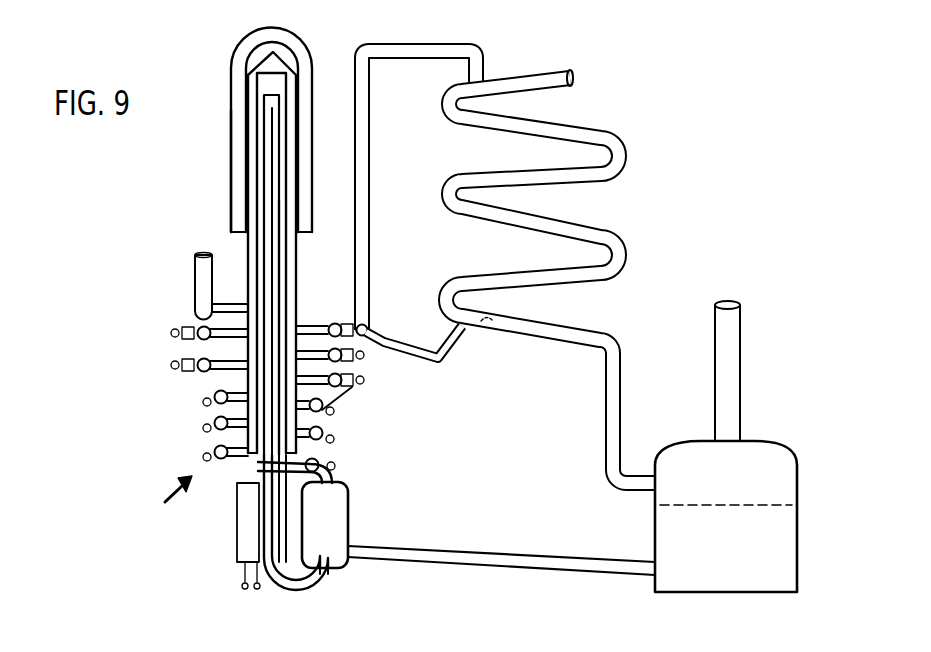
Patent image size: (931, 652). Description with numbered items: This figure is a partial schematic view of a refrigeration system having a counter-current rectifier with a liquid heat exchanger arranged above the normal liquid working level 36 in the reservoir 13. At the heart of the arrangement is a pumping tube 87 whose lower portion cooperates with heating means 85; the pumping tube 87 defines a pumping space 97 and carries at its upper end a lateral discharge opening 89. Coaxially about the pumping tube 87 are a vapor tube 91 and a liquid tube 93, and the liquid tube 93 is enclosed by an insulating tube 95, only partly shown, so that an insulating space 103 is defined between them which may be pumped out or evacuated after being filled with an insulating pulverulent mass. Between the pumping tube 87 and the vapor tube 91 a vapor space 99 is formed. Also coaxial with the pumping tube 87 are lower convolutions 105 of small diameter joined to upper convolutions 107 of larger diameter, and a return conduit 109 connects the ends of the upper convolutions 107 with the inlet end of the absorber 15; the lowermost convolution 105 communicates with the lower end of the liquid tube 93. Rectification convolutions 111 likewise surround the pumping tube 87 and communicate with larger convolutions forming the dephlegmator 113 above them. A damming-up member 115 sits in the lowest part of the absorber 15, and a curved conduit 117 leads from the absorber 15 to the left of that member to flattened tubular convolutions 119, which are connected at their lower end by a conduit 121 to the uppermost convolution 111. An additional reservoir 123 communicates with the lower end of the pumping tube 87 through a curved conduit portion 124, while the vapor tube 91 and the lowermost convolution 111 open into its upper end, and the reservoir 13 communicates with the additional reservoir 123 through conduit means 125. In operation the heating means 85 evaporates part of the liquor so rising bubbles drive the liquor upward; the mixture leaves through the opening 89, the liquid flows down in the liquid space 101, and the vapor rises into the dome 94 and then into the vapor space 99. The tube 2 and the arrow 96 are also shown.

The tube 2 is at (198, 280).
The reservoir 13 is at (657, 545).
The absorber 15 is at (620, 246).
The normal liquid working level 36 is at (725, 505).
The heating means 85 is at (237, 512).
The pumping tube 87 is at (262, 470).
The lateral discharge opening 89 is at (265, 101).
The vapor tube 91 is at (288, 218).
The liquid tube 93 is at (246, 212).
The dome 94 is at (268, 70).
The insulating tube 95 is at (231, 178).
The insertion direction 96 is at (157, 504).
The pumping space 97 is at (272, 286).
The vapor space 99 is at (278, 254).
The liquid space 101 is at (288, 185).
The insulating space 103 is at (240, 137).
The lower convolutions 105 is at (205, 426).
The upper convolutions 107 is at (170, 364).
The return conduit 109 is at (363, 265).
The rectification convolutions 111 is at (330, 432).
The dephlegmator 113 is at (200, 378).
The damming-up member 115 is at (487, 330).
The curved conduit 117 is at (437, 360).
The flattened tubular convolutions 119 is at (183, 332).
The conduit 121 is at (350, 398).
The additional reservoir 123 is at (347, 512).
The curved conduit portion 124 is at (330, 575).
The conduit means 125 is at (488, 553).